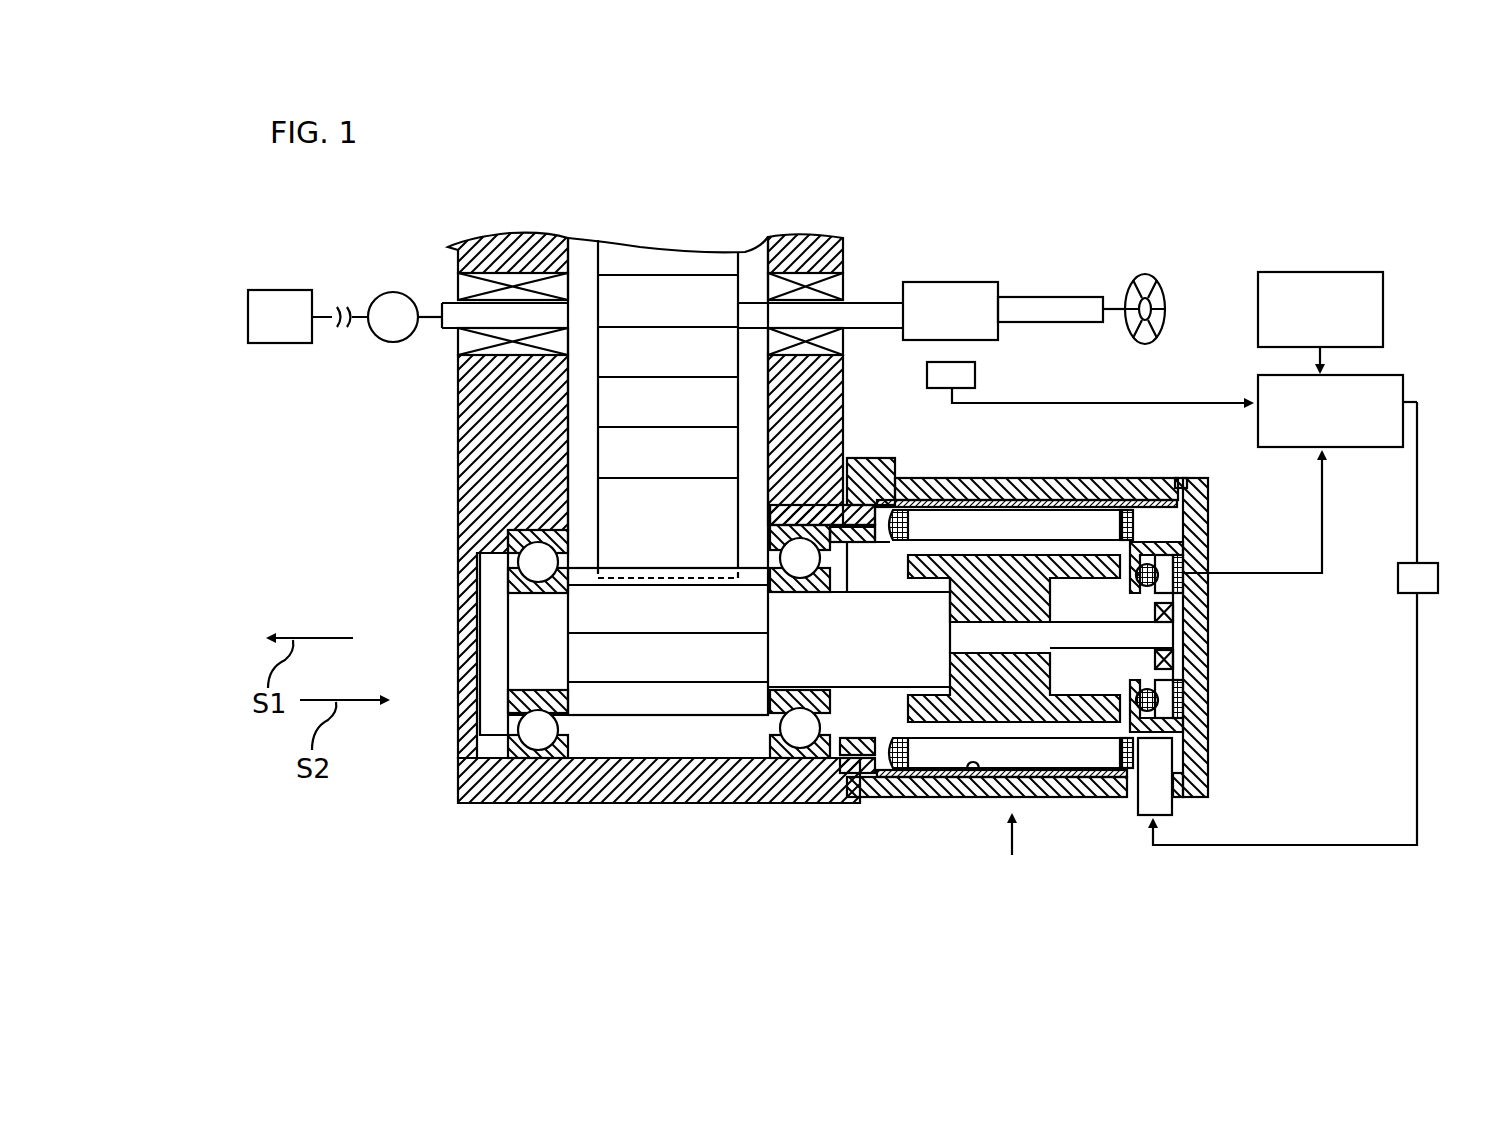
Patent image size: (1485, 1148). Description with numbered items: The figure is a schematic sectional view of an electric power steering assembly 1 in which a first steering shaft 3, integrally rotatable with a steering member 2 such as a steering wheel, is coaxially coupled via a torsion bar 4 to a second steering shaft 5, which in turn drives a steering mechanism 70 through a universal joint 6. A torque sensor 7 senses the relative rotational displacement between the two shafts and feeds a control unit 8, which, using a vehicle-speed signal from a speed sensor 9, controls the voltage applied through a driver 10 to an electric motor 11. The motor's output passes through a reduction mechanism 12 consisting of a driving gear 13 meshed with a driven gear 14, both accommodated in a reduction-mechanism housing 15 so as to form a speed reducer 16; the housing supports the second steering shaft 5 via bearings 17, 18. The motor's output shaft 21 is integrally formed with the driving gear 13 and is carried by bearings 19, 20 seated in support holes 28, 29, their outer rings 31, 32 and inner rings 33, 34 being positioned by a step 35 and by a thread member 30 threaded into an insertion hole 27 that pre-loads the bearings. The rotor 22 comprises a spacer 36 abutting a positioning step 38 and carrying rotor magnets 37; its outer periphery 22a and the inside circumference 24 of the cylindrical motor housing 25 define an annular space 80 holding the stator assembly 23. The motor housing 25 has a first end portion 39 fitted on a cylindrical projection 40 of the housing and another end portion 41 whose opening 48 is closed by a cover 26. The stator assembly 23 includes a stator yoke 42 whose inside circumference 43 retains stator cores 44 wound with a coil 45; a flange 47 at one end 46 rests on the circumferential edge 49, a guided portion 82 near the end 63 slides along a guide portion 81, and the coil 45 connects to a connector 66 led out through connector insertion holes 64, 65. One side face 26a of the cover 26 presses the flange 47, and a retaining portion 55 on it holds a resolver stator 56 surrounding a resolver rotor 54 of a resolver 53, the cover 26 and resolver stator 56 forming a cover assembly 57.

The electric power steering assembly 1 is at (1205, 235).
The steering member 2 is at (1148, 275).
The first steering shaft 3 is at (1076, 297).
The torsion bar 4 is at (975, 283).
The second steering shaft 5 is at (752, 300).
The universal joint 6 is at (393, 293).
The torque sensor 7 is at (975, 375).
The control unit 8 is at (1385, 378).
The speed sensor 9 is at (1385, 302).
The driver 10 is at (1425, 563).
The electric motor 11 is at (995, 857).
The reduction mechanism 12 is at (402, 430).
The driving gear 13 is at (570, 522).
The driven gear 14 is at (600, 488).
The reduction-mechanism housing 15 is at (458, 413).
The speed reducer 16 is at (352, 385).
The bearing 17 is at (512, 260).
The bearing 18 is at (803, 262).
The bearing 19 is at (500, 750).
The bearing 20 is at (770, 690).
The output shaft 21 is at (858, 556).
The rotor 22 is at (990, 446).
The outer periphery 22a is at (1052, 725).
The stator assembly 23 is at (1188, 446).
The inside circumference 24 is at (1075, 500).
The motor housing 25 is at (1055, 510).
The cover 26 is at (1208, 722).
The one side face 26a is at (1195, 760).
The insertion hole 27 is at (805, 750).
The support hole 28 is at (543, 765).
The support hole 29 is at (775, 738).
The thread member 30 is at (832, 760).
The outer ring 31 is at (512, 770).
The outer ring 32 is at (766, 762).
The inner ring 33 is at (505, 703).
The inner ring 34 is at (762, 748).
The step 35 is at (518, 728).
The spacer 36 is at (933, 510).
The rotor magnets 37 is at (963, 540).
The positioning step 38 is at (1000, 490).
The first end portion 39 is at (893, 800).
The cylindrical projection 40 is at (870, 802).
The other end portion 41 is at (1088, 792).
The stator yoke 42 is at (1103, 492).
The inside circumference 43 is at (1195, 520).
The stator cores 44 is at (1135, 503).
The coil 45 is at (1160, 512).
The one end 46 is at (1185, 478).
The flange 47 is at (1200, 500).
The opening 48 is at (1178, 612).
The circumferential edge 49 is at (1195, 483).
The resolver 53 is at (1185, 598).
The resolver rotor 54 is at (1175, 662).
The retaining portion 55 is at (1195, 536).
The resolver stator 56 is at (1208, 700).
The cover assembly 57 is at (1278, 692).
The end 63 is at (910, 800).
The connector insertion hole 64 is at (1153, 835).
The connector insertion hole 65 is at (1138, 778).
The connector 66 is at (1175, 806).
The steering mechanism 70 is at (268, 298).
The annular space 80 is at (1068, 910).
The guide portion 81 is at (974, 772).
The guided portion 82 is at (935, 783).